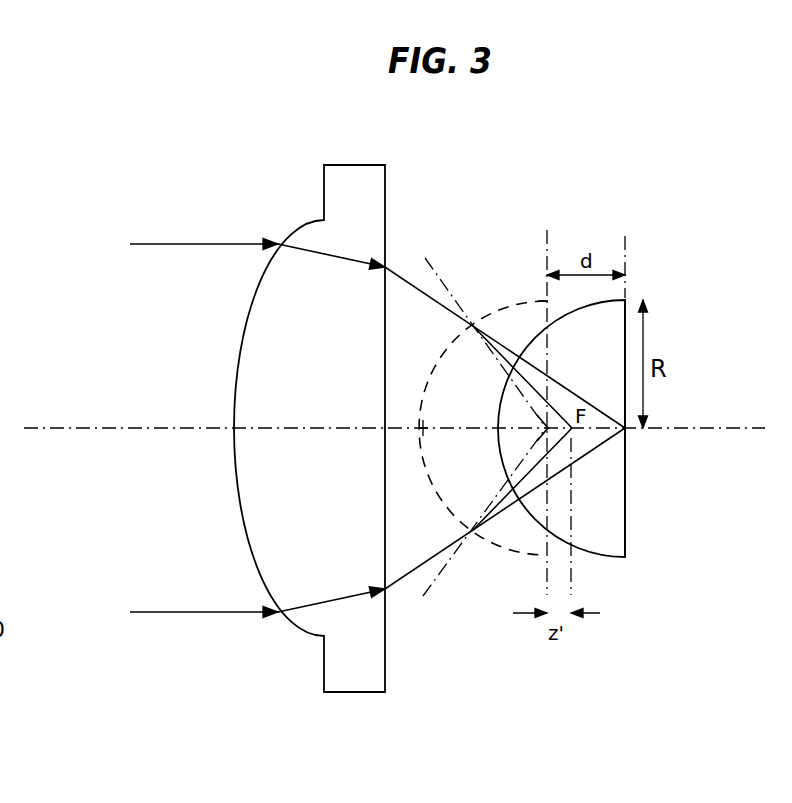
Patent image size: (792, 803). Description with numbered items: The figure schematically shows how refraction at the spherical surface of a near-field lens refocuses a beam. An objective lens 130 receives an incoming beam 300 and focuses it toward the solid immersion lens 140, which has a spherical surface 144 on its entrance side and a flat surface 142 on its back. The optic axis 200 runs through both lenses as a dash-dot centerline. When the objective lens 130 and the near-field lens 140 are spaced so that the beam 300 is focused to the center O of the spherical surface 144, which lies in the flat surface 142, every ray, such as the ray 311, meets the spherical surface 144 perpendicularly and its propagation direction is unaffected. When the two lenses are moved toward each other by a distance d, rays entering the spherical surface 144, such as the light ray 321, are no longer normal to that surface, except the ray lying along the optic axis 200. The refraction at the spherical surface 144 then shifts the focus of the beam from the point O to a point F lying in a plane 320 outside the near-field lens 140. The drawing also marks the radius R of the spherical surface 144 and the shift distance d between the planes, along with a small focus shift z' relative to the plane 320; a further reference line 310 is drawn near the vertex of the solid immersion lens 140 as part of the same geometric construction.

The objective lens 130 is at (383, 651).
The solid immersion lens 140 is at (621, 582).
The flat surface 142 is at (626, 522).
The spherical surface 144 is at (506, 427).
The optic axis 200 is at (150, 428).
The beam 300 is at (212, 611).
The vertex plane 310 is at (627, 232).
The ray 311 is at (627, 436).
The plane 320 is at (548, 228).
The light ray 321 is at (572, 436).